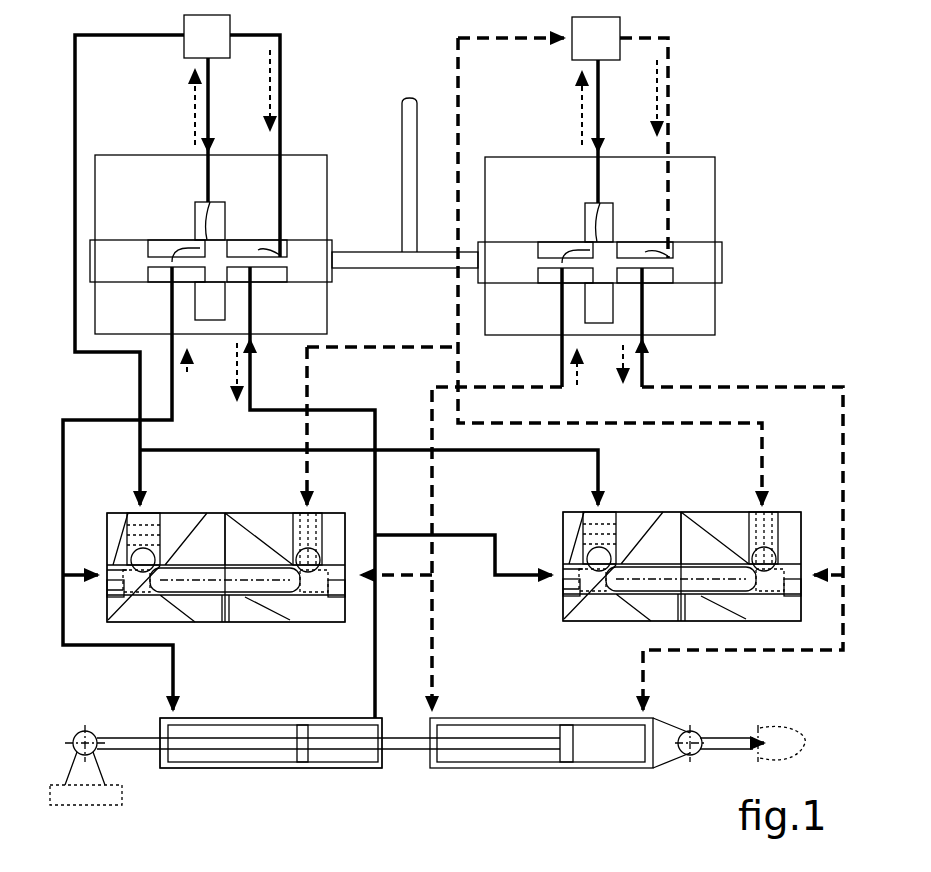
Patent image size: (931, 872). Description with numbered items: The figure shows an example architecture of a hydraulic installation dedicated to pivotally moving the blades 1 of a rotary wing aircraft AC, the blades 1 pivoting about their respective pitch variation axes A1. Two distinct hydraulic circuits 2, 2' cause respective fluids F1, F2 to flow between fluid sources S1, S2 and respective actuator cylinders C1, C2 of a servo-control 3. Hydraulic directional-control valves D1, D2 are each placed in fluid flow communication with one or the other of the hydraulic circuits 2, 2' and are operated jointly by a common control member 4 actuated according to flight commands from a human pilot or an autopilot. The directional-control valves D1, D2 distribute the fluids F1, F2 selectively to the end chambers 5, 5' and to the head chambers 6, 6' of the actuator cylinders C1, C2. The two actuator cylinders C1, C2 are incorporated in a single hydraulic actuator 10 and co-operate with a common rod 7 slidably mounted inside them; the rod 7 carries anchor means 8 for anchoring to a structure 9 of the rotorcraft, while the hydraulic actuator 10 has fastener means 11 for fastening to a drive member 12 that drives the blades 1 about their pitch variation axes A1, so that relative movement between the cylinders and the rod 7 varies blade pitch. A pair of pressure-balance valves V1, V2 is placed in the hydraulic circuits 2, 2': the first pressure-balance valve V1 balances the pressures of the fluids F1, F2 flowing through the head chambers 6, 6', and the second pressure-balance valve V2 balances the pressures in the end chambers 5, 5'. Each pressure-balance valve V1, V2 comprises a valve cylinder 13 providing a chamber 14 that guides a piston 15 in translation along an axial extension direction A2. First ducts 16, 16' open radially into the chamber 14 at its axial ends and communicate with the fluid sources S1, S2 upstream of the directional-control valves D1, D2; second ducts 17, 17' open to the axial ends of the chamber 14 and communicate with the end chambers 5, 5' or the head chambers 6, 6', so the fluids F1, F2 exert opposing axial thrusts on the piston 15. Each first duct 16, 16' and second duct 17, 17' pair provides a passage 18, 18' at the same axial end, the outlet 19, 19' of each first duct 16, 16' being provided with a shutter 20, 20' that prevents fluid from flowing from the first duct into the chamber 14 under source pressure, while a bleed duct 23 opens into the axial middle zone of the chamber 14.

The blades 1 is at (786, 728).
The hydraulic circuit 2 is at (330, 366).
The hydraulic circuit 2' is at (575, 362).
The servo-control 3 is at (410, 776).
The common control member 4 is at (402, 165).
The end chamber 5 is at (541, 772).
The end chamber 5' is at (273, 764).
The head chamber 6 is at (592, 764).
The head chamber 6' is at (330, 764).
The rod 7 is at (404, 697).
The anchor means 8 is at (85, 730).
The structure 9 is at (100, 806).
The hydraulic actuator 10 is at (162, 732).
The fastener means 11 is at (688, 732).
The drive member 12 is at (725, 738).
The valve cylinder 13 is at (240, 540).
The chamber 14 is at (225, 608).
The piston 15 is at (278, 585).
The first duct 16 is at (346, 527).
The first duct 16' is at (564, 514).
The second duct 17 is at (328, 611).
The second duct 17' is at (579, 611).
The passage 18 is at (368, 624).
The passage 18' is at (552, 618).
The outlet 19 is at (99, 558).
The outlet 19' is at (549, 564).
The shutter 20 is at (386, 525).
The shutter 20' is at (524, 525).
The bleed duct 23 is at (228, 605).
The fluid source S1 is at (596, 38).
The fluid source S2 is at (207, 36).
The hydraulic directional-control valve D1 is at (600, 222).
The hydraulic directional-control valve D2 is at (211, 225).
The first pressure-balance valve V1 is at (603, 660).
The second pressure-balance valve V2 is at (248, 662).
The actuator cylinder C1 is at (525, 776).
The actuator cylinder C2 is at (196, 776).
The pitch variation axis A1 is at (761, 739).
The axial extension direction A2 is at (193, 578).
The rotary wing aircraft AC is at (745, 150).
The fluid F1 is at (575, 372).
The fluid F2 is at (331, 367).